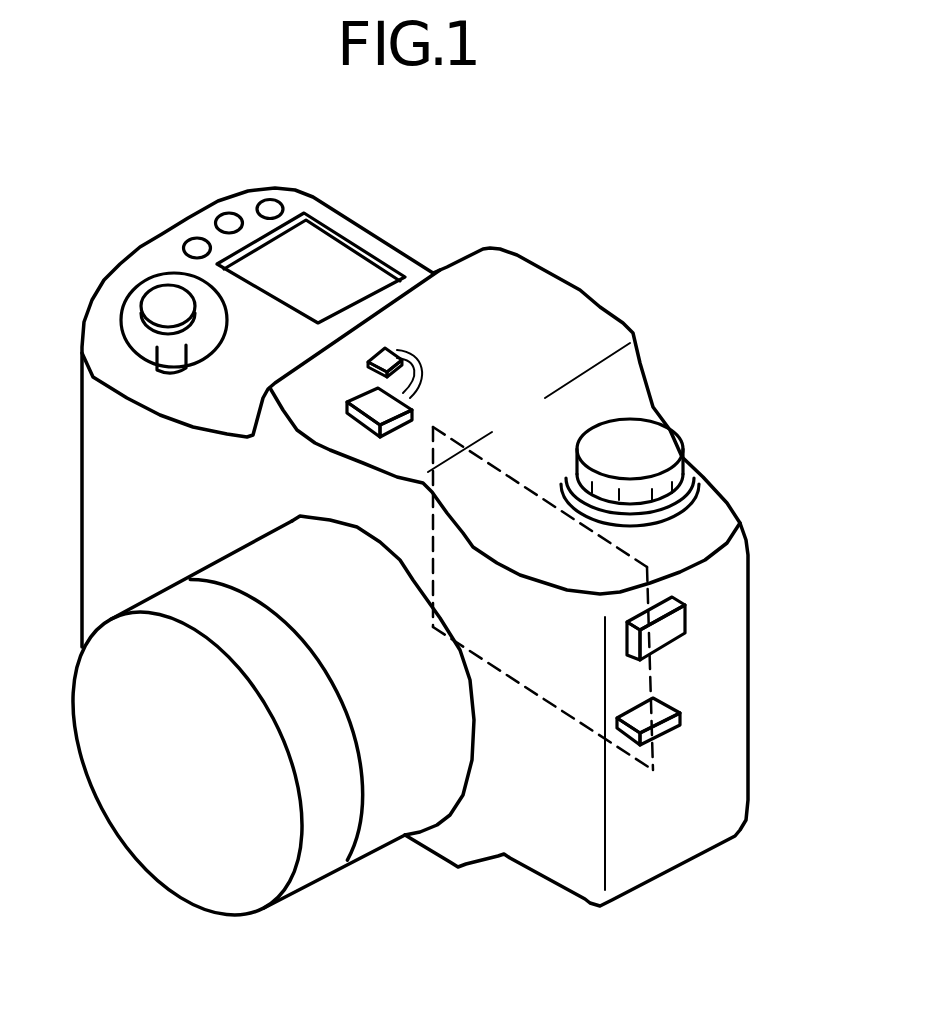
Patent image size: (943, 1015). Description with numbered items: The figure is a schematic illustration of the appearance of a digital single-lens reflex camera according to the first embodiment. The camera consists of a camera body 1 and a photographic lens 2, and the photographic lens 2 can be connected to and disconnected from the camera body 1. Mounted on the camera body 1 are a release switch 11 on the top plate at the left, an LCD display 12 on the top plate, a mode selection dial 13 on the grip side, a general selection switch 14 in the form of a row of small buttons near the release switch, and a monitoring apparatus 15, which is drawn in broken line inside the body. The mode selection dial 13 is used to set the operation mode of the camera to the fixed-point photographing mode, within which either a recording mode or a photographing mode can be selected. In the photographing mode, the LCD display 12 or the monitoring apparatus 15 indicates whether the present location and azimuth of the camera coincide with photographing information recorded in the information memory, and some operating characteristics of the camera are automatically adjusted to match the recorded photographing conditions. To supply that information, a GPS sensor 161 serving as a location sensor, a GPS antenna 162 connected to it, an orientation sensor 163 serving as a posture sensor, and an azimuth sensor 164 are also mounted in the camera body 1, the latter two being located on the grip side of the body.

The camera body 1 is at (655, 360).
The photographic lens 2 is at (310, 887).
The release switch 11 is at (167, 307).
The LCD display 12 is at (343, 267).
The mode selection dial 13 is at (655, 457).
The operation buttons 14 is at (257, 184).
The monitoring apparatus 15 is at (630, 760).
The GPS sensor 161 is at (403, 403).
The GPS antenna 162 is at (387, 364).
The orientation sensor 163 is at (663, 728).
The azimuth sensor 164 is at (662, 635).